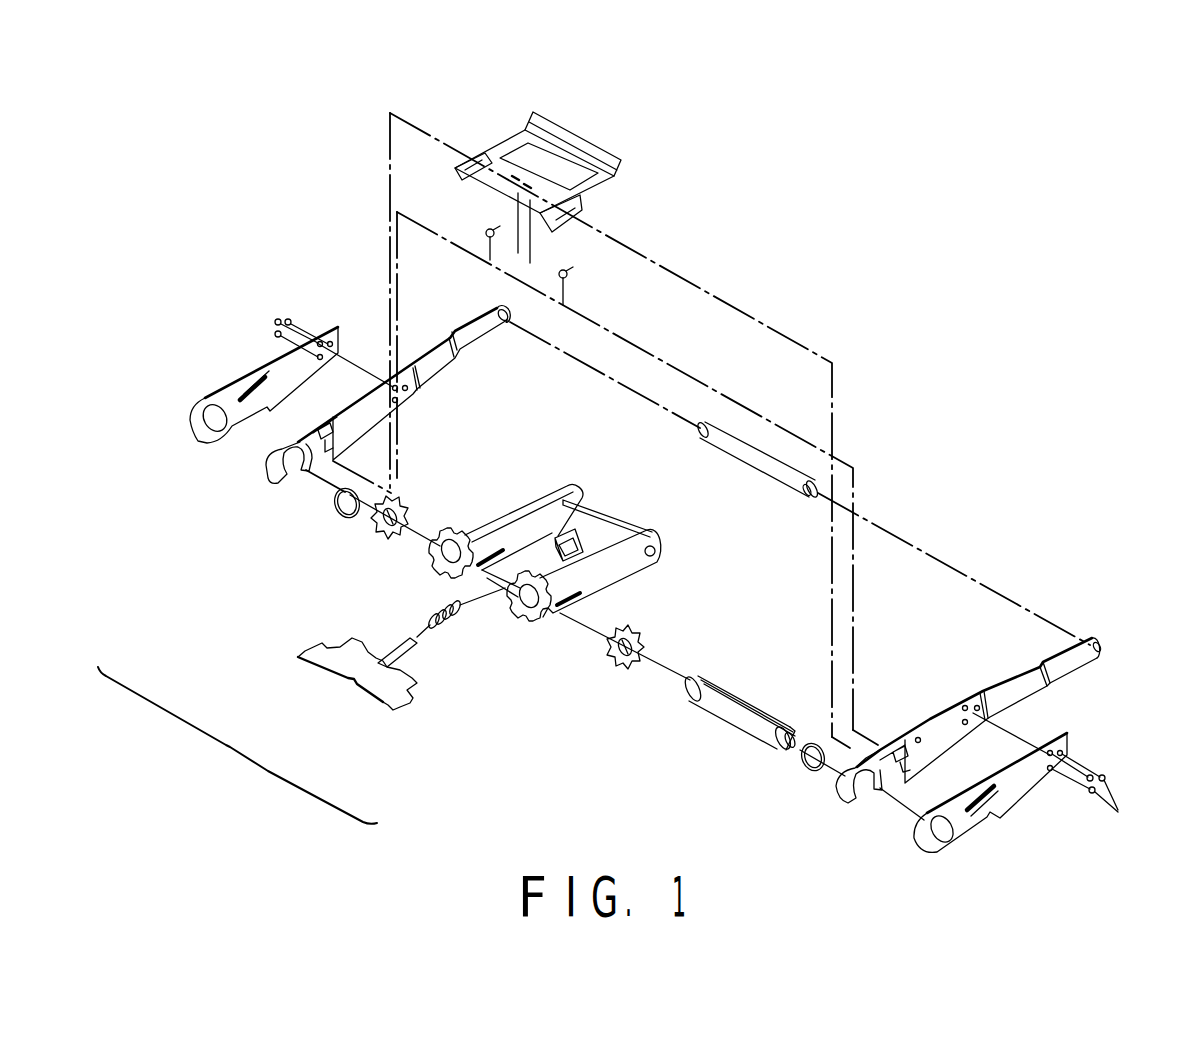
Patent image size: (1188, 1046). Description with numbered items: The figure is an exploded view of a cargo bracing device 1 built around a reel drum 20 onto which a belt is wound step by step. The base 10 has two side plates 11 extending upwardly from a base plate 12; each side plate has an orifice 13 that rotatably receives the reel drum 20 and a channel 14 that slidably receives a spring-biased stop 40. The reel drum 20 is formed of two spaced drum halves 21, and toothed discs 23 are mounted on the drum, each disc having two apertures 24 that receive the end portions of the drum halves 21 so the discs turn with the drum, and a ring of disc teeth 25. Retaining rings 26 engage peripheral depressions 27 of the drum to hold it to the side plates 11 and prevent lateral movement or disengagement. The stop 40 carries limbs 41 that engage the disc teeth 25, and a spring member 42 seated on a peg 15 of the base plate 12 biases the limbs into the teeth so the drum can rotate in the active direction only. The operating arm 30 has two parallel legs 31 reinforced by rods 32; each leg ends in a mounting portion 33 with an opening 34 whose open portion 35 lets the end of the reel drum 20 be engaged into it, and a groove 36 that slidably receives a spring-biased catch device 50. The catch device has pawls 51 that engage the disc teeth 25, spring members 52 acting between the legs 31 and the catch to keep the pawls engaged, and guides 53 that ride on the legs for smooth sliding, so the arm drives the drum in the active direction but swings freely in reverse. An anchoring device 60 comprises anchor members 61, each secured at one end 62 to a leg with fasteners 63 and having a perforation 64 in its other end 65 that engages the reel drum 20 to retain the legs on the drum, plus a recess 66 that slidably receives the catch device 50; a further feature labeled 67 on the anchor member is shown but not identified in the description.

The cargo bracing device 1 is at (925, 276).
The base 10 is at (594, 560).
The side plates 11 is at (622, 575).
The base plate 12 is at (534, 542).
The orifice 13 is at (452, 545).
The channel 14 is at (573, 617).
The peg 15 is at (578, 543).
The reel drum 20 is at (741, 746).
The drum halves 21 is at (791, 748).
The toothed discs 23 is at (642, 643).
The apertures 24 is at (634, 665).
The disc teeth 25 is at (377, 520).
The retaining rings 26 is at (808, 775).
The peripheral depressions 27 is at (690, 695).
The operating arm 30 is at (996, 705).
The legs 31 is at (1027, 685).
The rods 32 is at (778, 467).
The mounting portion 33 is at (280, 438).
The opening 34 is at (293, 462).
The open portion 35 is at (860, 790).
The groove 36 is at (912, 743).
The spring-biased stop 40 is at (320, 648).
The limbs 41 is at (392, 708).
The spring member 42 is at (445, 632).
The spring-biased catch device 50 is at (507, 163).
The pawls 51 is at (547, 220).
The spring members 52 is at (488, 238).
The guides 53 is at (477, 157).
The anchoring device 60 is at (225, 341).
The anchor members 61 is at (290, 360).
The one end 62 is at (330, 327).
The fasteners 63 is at (1118, 812).
The perforation 64 is at (1028, 821).
The other end 65 is at (188, 418).
The recess 66 is at (257, 373).
The guide slot 67 is at (975, 812).